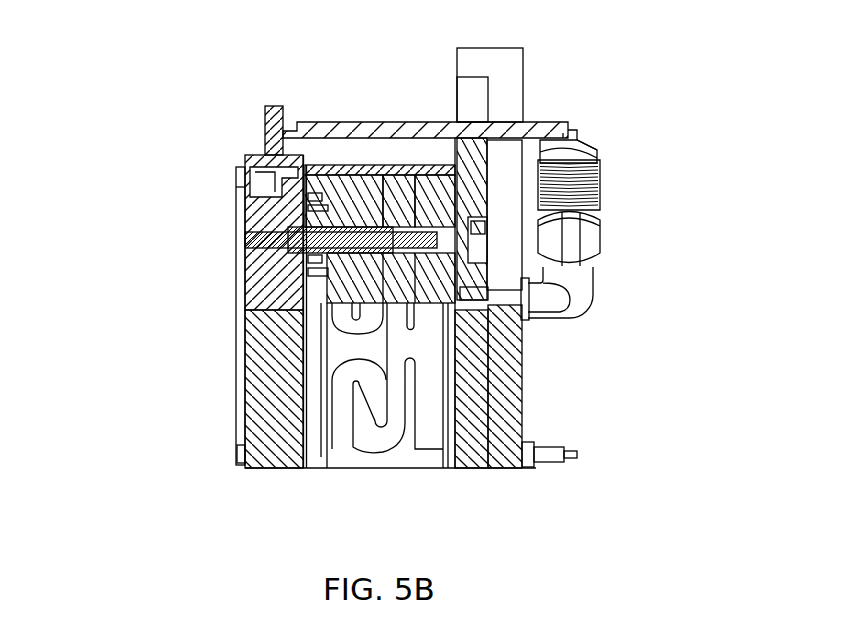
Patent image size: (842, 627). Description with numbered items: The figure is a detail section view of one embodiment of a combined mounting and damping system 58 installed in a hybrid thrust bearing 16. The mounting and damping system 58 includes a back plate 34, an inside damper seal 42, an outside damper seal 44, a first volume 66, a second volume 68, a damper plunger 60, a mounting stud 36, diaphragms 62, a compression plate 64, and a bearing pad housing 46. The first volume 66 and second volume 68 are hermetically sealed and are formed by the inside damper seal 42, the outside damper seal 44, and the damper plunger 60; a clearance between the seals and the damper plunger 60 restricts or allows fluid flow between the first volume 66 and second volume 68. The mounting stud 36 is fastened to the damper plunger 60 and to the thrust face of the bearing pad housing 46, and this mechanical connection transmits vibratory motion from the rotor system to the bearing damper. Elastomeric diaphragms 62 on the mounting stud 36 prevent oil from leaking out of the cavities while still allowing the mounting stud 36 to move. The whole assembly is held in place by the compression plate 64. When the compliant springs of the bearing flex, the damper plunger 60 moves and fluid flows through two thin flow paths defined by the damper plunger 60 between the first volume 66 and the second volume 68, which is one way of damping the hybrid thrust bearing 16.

The hybrid thrust bearing 16 is at (412, 240).
The back plate 34 is at (523, 364).
The mounting stud 36 is at (347, 264).
The inside damper seal 42 is at (428, 305).
The outside damper seal 44 is at (447, 178).
The bearing pad housing 46 is at (247, 286).
The mounting and damping system 58 is at (411, 133).
The damper plunger 60 is at (422, 172).
The diaphragm 62 is at (318, 182).
The compression plate 64 is at (247, 188).
The first volume 66 is at (400, 187).
The second volume 68 is at (332, 178).